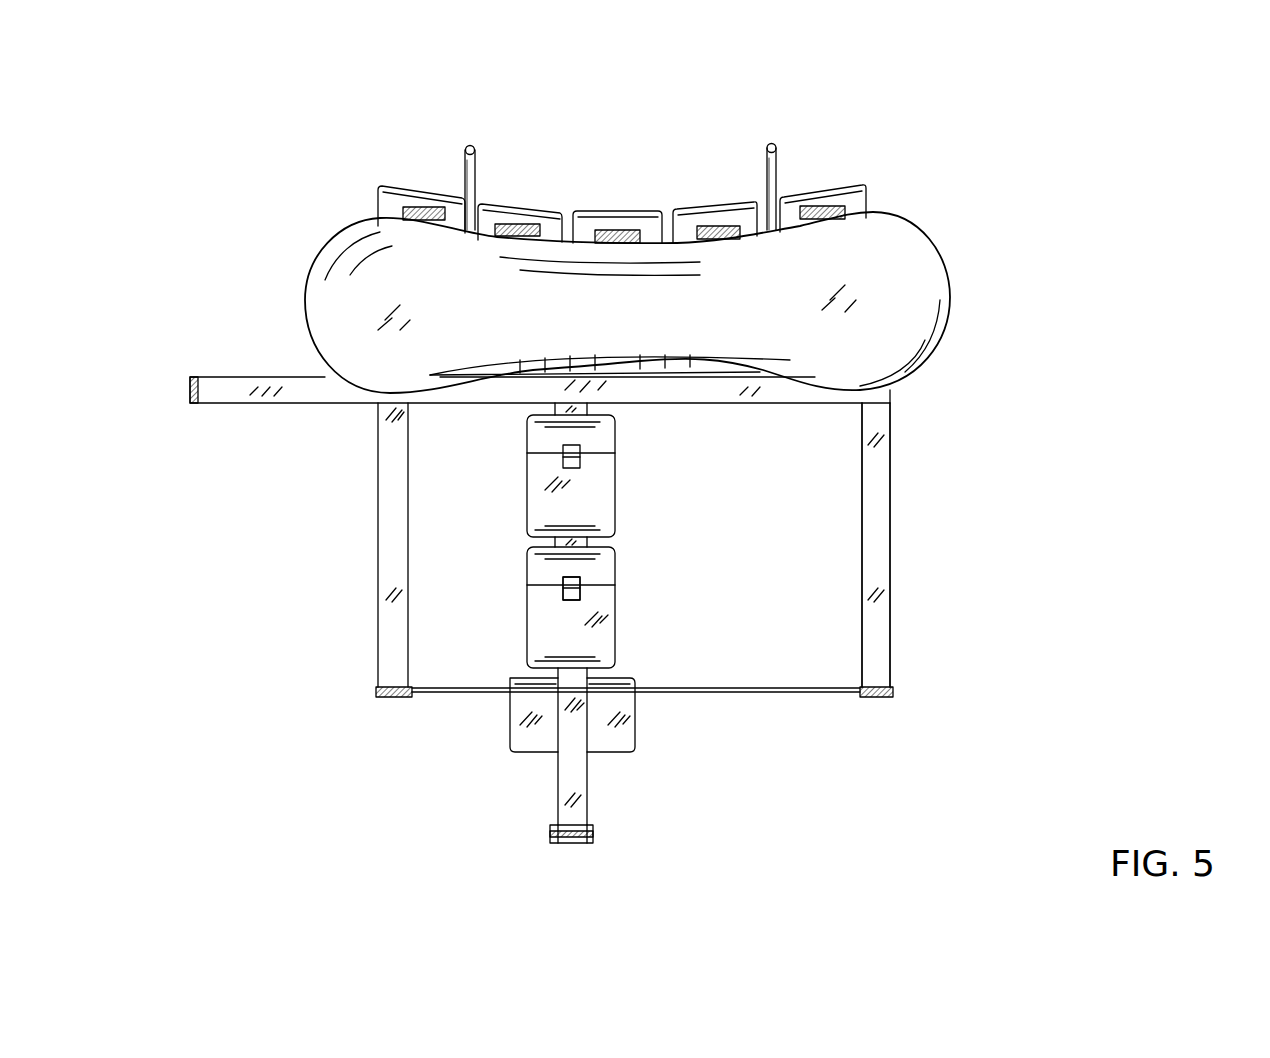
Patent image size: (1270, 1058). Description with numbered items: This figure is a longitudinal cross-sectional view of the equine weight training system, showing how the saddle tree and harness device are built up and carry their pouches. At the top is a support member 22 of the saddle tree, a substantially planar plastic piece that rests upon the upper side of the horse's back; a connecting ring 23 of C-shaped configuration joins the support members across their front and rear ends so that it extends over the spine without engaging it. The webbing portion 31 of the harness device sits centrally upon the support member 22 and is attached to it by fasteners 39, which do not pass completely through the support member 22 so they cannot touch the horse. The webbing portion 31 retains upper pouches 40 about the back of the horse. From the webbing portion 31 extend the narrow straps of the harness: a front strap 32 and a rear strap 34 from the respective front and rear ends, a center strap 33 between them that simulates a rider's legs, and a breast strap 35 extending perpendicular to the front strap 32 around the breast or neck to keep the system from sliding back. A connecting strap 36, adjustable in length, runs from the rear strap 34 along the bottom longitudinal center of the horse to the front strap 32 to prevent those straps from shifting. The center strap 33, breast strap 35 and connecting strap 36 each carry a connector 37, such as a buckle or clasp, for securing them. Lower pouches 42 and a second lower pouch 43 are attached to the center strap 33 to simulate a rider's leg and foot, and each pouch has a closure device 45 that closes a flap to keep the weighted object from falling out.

The support member 22 is at (935, 257).
The connecting ring 23 is at (772, 145).
The webbing portion 31 is at (622, 230).
The front strap 32 is at (382, 635).
The center strap 33 is at (560, 793).
The rear strap 34 is at (890, 490).
The breast strap 35 is at (248, 378).
The connecting strap 36 is at (440, 694).
The connector 37 is at (380, 691).
The fastener 39 is at (370, 490).
The upper pouch 40 is at (830, 185).
The lower pouch 42 is at (613, 473).
The second lower pouch 43 is at (633, 722).
The closure device 45 is at (563, 595).